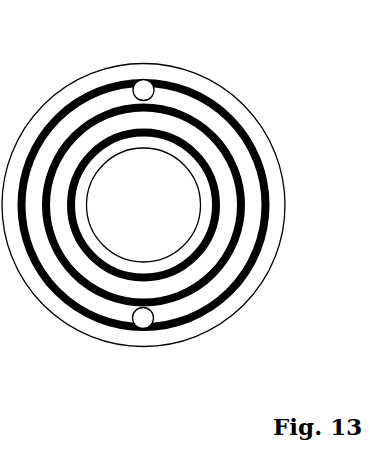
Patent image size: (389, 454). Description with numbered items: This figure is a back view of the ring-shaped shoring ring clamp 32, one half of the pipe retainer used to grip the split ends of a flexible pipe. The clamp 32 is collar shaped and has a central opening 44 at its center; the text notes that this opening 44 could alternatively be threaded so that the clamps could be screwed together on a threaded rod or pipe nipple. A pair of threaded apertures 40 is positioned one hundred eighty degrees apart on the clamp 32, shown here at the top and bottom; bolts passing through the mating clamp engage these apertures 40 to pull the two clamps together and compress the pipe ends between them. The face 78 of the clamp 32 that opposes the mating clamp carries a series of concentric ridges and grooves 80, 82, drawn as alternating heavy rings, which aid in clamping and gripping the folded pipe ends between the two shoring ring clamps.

The shoring ring clamp 32 is at (246, 110).
The threaded apertures 40 is at (144, 90).
The central opening 44 is at (144, 205).
The opposing faces 78 is at (271, 165).
The ridges 80 is at (267, 203).
The grooves 82 is at (256, 245).